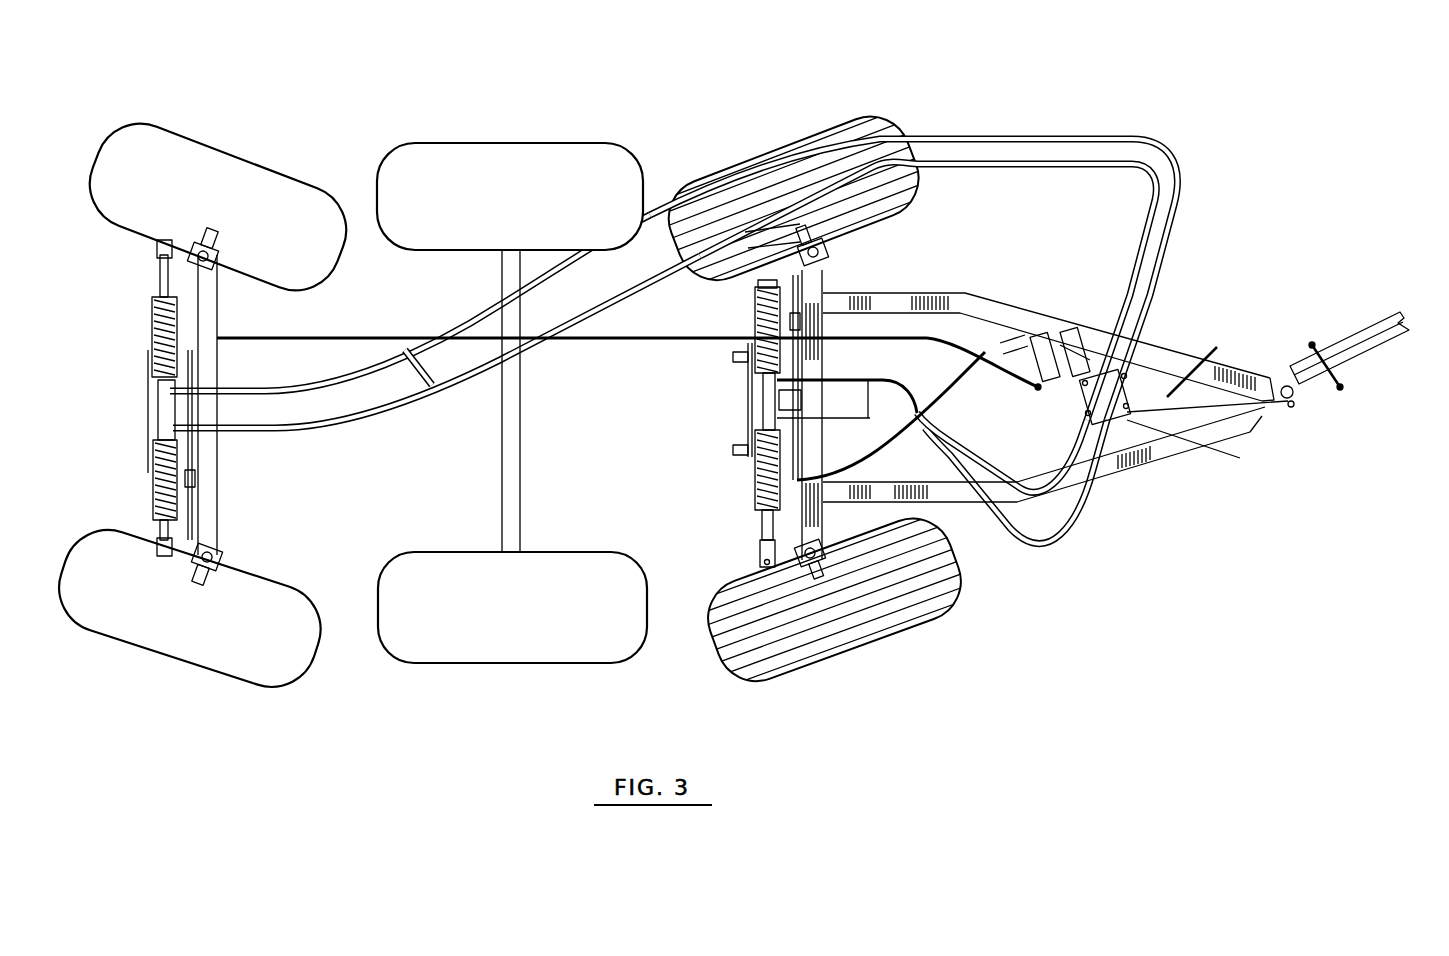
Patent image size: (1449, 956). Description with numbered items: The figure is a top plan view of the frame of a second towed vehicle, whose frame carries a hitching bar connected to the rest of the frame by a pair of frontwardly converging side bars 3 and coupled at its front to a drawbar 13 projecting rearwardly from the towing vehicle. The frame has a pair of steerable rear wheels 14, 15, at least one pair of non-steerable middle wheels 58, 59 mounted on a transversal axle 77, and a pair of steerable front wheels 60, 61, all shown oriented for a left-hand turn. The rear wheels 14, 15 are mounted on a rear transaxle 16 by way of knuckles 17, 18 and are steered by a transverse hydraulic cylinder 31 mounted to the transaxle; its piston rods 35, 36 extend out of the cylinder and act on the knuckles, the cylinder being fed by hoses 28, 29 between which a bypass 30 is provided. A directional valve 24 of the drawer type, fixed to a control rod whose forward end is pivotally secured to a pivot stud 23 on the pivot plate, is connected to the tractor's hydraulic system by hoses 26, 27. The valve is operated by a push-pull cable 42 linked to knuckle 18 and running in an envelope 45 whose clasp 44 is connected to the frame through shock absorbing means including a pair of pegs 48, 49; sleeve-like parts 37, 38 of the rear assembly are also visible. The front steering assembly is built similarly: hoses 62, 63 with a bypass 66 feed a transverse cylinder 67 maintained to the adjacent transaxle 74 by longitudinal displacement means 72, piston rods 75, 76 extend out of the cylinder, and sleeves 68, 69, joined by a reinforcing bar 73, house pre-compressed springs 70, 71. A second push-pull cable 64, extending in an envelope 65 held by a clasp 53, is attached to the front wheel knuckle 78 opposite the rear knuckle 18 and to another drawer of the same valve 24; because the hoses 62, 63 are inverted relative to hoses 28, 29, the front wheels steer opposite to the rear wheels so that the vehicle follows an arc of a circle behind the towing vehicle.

The side bars 3 is at (1147, 353).
The drawbar 13 is at (1380, 340).
The steerable rear wheel 14 is at (165, 150).
The steerable rear wheel 15 is at (188, 637).
The rear transaxle 16 is at (207, 372).
The knuckle 17 is at (183, 247).
The knuckle 18 is at (218, 543).
The pivot stud 23 is at (1290, 403).
The directional valve 24 is at (1263, 423).
The hydraulic hose 26 is at (1153, 417).
The hydraulic hose 27 is at (1215, 357).
The hydraulic hose 28 is at (360, 417).
The hydraulic hose 29 is at (307, 373).
The bypass 30 is at (457, 387).
The hydraulic cylinder 31 is at (165, 389).
The piston rod 35 is at (158, 283).
The piston rod 36 is at (157, 503).
The upper spring 37 is at (155, 325).
The spring housing 38 is at (155, 477).
The push-pull cable 42 is at (195, 517).
The second attachment clasp 44 is at (1032, 392).
The envelope 45 is at (643, 340).
The peg 48 is at (1042, 333).
The peg 49 is at (1093, 337).
The clasp 53 is at (1050, 400).
The non-steerable middle wheel 58 is at (486, 211).
The non-steerable middle wheel 59 is at (498, 630).
The steerable front wheel 60 is at (767, 167).
The steerable front wheel 61 is at (880, 617).
The hydraulic hose 62 is at (1027, 490).
The hydraulic hose 63 is at (1047, 553).
The push-pull cable 64 is at (827, 283).
The envelope 65 is at (953, 370).
The bypass 66 is at (877, 400).
The transverse cylinder 67 is at (753, 423).
The sleeve 68 is at (750, 340).
The sleeve 69 is at (753, 472).
The pre-compressed spring 70 is at (753, 370).
The pre-compressed spring 71 is at (830, 473).
The longitudinal displacement means 72 is at (801, 405).
The reinforcing bar 73 is at (750, 413).
The transaxle 74 is at (813, 367).
The piston rod 75 is at (757, 317).
The piston rod 76 is at (760, 525).
The transversal axle 77 is at (520, 528).
The front wheel knuckle 78 is at (788, 262).